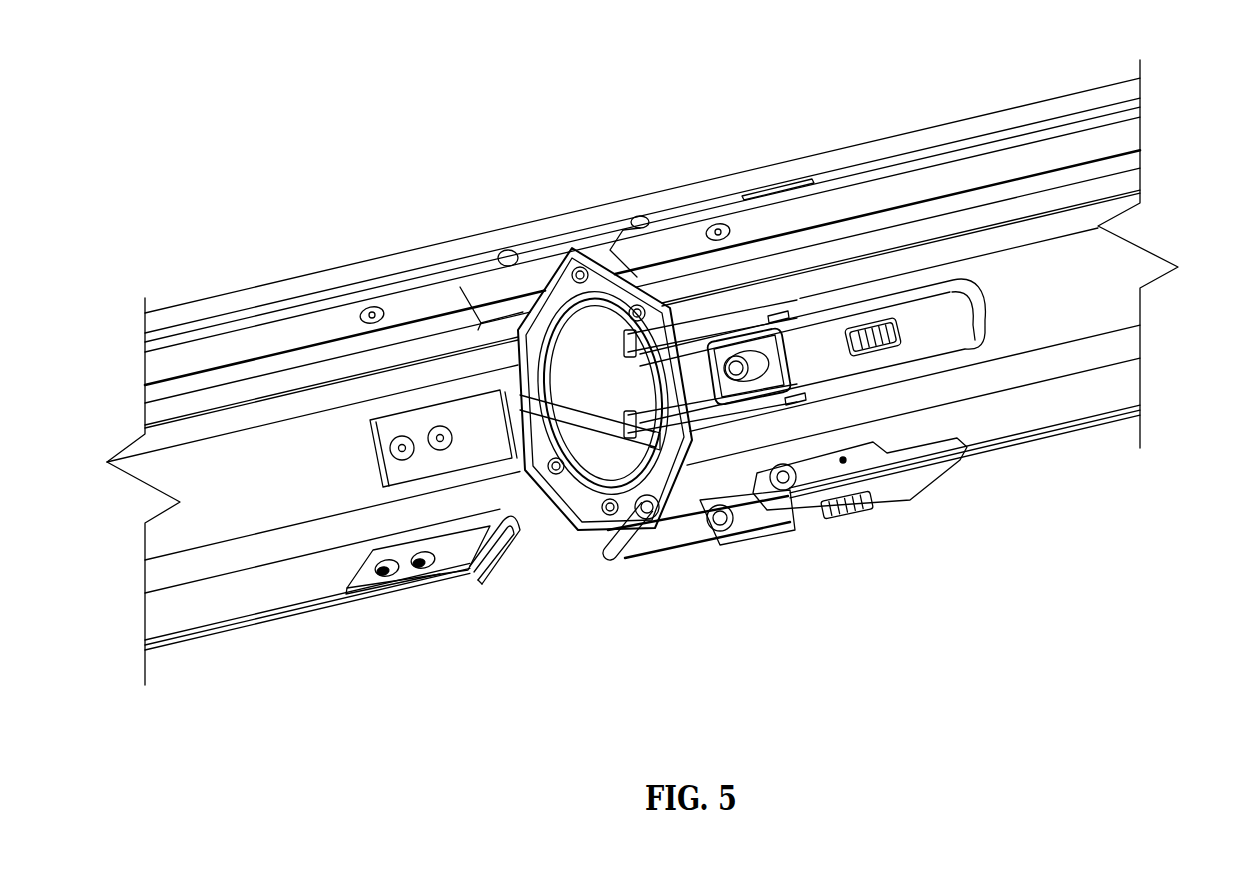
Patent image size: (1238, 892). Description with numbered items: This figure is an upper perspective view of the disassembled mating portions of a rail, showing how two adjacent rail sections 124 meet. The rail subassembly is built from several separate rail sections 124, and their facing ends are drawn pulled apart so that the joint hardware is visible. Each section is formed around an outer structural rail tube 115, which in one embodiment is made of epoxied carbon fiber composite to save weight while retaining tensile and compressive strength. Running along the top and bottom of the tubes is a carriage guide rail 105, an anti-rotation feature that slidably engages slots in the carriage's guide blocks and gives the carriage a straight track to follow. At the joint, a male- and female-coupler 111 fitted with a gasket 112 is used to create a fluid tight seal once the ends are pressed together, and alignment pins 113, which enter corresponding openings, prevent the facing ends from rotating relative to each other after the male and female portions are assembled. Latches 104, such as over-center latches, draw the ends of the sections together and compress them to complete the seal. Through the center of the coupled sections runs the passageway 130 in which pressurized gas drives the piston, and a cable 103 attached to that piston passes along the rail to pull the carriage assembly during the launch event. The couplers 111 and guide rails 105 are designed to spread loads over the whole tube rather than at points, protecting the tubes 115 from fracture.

The cable 103 is at (425, 257).
The latch 104 is at (930, 367).
The carriage guide rail 105 is at (670, 237).
The male- and female-coupler 111 is at (740, 425).
The gasket 112 is at (650, 514).
The alignment pin 113 is at (540, 247).
The outer structural rail tube 115 is at (282, 463).
The rail section 124 is at (1075, 433).
The passageway 130 is at (576, 488).